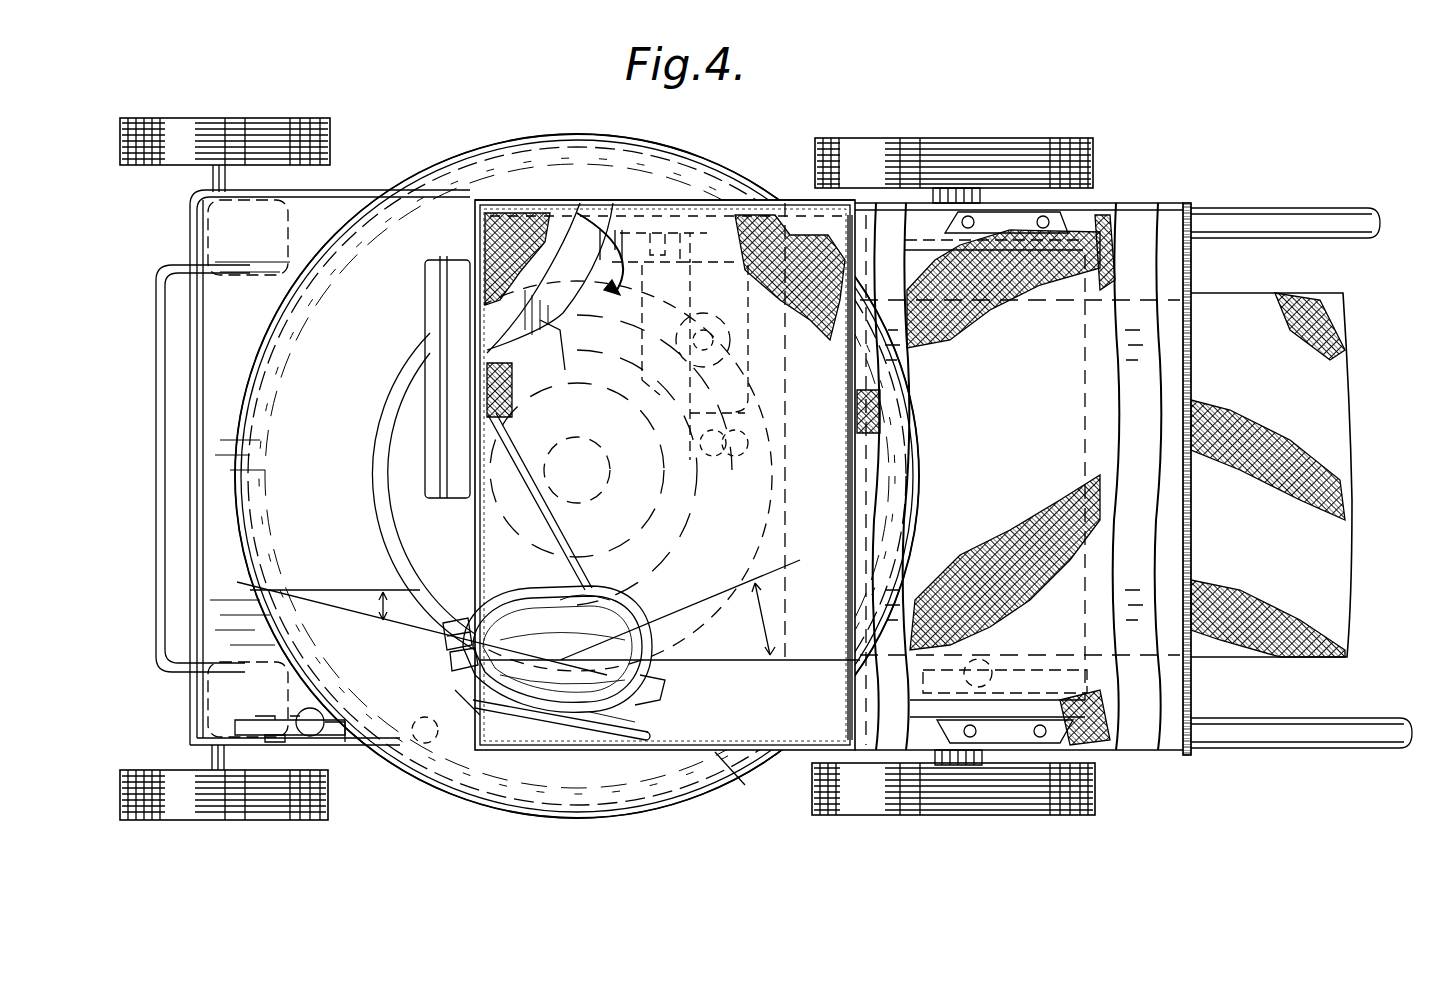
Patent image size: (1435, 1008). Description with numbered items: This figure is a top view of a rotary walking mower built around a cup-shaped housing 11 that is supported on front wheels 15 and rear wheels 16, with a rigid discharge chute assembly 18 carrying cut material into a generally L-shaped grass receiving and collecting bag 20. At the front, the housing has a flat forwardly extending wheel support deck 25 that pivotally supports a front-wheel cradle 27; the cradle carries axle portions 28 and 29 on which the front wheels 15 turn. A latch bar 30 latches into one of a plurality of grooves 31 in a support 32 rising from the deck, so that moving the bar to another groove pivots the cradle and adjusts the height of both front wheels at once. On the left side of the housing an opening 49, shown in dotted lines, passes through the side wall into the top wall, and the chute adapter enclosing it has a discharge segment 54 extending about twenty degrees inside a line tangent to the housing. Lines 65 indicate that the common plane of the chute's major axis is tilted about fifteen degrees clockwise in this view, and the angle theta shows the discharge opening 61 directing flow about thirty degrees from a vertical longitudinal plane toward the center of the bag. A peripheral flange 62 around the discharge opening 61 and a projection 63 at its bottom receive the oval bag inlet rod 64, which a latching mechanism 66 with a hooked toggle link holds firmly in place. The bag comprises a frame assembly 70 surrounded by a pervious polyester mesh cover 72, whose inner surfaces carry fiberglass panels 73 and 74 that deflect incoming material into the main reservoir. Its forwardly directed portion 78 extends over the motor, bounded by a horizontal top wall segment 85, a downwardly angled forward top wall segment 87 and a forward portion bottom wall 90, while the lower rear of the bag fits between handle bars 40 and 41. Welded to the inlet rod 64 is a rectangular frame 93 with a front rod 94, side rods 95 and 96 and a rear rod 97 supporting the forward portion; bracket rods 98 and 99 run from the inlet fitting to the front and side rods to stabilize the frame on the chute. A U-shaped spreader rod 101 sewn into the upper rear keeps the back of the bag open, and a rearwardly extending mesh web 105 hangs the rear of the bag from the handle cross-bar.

The cup-shaped housing 11 is at (385, 205).
The front wheels 15 is at (322, 125).
The rear wheels 16 is at (1012, 145).
The discharge chute assembly 18 is at (704, 795).
The grass receiving and collecting container or bag 20 is at (722, 198).
The wheel support deck 25 is at (215, 515).
The front-wheel cradle 27 is at (156, 372).
The axle portion 28 is at (213, 175).
The axle portion 29 is at (212, 758).
The latch bar 30 is at (262, 720).
The grooves 31 is at (278, 745).
The support 32 is at (328, 740).
The handle bar 40 is at (1270, 220).
The handle bar 41 is at (1330, 737).
The opening 49 is at (618, 600).
The discharge segment 54 is at (735, 762).
The discharge opening 61 is at (640, 610).
The peripheral flange 62 is at (467, 690).
The projection 63 is at (658, 680).
The bag inlet rod 64 is at (540, 725).
The lines 65 is at (370, 615).
The latching mechanism 66 is at (420, 660).
The frame assembly 70 is at (468, 198).
The mesh material cover 72 is at (1025, 482).
The fiberglass panel 73 is at (555, 306).
The fiberglass panel 74 is at (1138, 515).
The forwardly directed portion 78 is at (556, 258).
The horizontal top wall segment 85 is at (940, 262).
The forward top wall segment 87 is at (512, 228).
The forward portion bottom wall 90 is at (800, 255).
The rectangular frame 93 is at (853, 395).
The front rod 94 is at (470, 380).
The side rod 95 is at (680, 220).
The side rod 96 is at (672, 760).
The rear rod 97 is at (850, 518).
The bracket rod 98 is at (512, 452).
The bracket rod 99 is at (625, 725).
The spreader rod 101 is at (1191, 570).
The mesh web 105 is at (1335, 338).